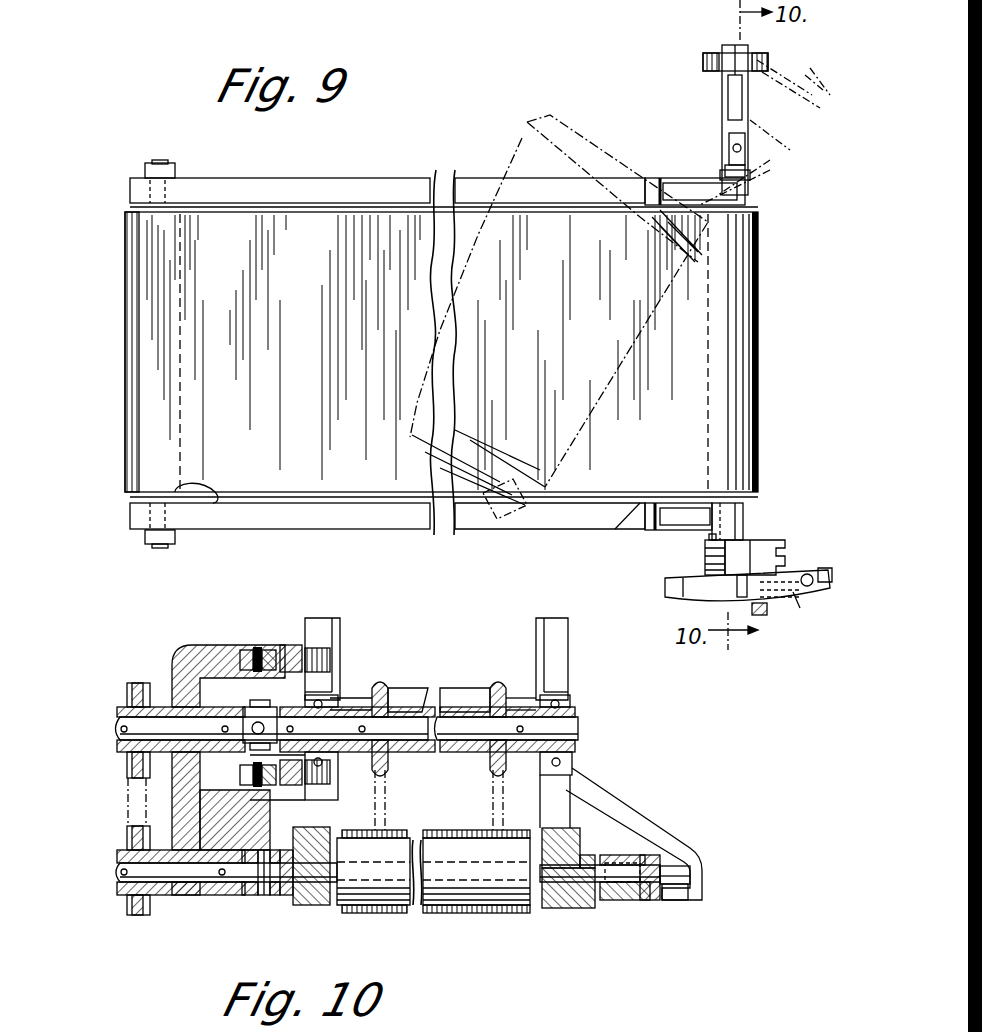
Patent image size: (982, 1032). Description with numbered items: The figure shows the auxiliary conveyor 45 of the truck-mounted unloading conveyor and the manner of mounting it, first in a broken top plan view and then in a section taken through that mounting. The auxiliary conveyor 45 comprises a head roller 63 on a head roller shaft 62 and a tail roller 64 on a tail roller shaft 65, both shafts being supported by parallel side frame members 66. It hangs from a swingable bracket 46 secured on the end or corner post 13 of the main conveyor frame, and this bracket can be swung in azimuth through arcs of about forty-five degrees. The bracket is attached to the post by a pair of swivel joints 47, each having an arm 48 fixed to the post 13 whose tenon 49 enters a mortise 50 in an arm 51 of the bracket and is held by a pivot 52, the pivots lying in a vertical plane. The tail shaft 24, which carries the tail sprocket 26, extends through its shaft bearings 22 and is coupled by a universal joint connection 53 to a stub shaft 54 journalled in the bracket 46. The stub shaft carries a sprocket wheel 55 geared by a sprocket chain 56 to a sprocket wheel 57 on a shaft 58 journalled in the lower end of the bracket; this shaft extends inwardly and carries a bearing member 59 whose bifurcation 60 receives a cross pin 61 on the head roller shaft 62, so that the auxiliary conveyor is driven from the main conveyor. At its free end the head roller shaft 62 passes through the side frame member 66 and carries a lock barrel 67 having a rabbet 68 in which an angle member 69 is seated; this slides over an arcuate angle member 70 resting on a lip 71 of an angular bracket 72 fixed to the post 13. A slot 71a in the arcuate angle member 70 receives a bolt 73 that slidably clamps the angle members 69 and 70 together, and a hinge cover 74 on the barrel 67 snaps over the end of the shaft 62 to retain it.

In FIG. 10, the end or corner post 13 is at (340, 630).
In FIG. 10, the shaft bearing 22 is at (330, 752).
In FIG. 10, the tail shaft 24 is at (440, 742).
In FIG. 10, the tail sprocket 26 is at (382, 685).
In FIG. 9, the auxiliary conveyor 45 is at (458, 220).
In FIG. 10, the auxiliary conveyor 45 is at (418, 838).
In FIG. 9, the swingable bracket 46 is at (722, 88).
In FIG. 10, the swingable bracket 46 is at (176, 668).
In FIG. 10, the swivel joint 47 is at (285, 645).
In FIG. 10, the arm 48 is at (320, 660).
In FIG. 10, the tenon 49 is at (265, 660).
In FIG. 10, the mortise 50 is at (236, 645).
In FIG. 10, the arm 51 is at (206, 645).
In FIG. 10, the pivot 52 is at (257, 645).
In FIG. 10, the universal joint connection 53 is at (248, 712).
In FIG. 10, the stub shaft 54 is at (130, 724).
In FIG. 10, the sprocket wheel 55 is at (132, 695).
In FIG. 10, the sprocket chain 56 is at (128, 796).
In FIG. 9, the sprocket wheel 57 is at (712, 54).
In FIG. 10, the sprocket wheel 57 is at (136, 915).
In FIG. 10, the shaft 58 is at (178, 897).
In FIG. 9, the bearing member 59 is at (750, 145).
In FIG. 10, the bearing member 59 is at (232, 895).
In FIG. 9, the bifurcation 60 is at (755, 175).
In FIG. 10, the bifurcation 60 is at (273, 897).
In FIG. 9, the cross pin 61 is at (727, 155).
In FIG. 10, the cross pin 61 is at (262, 897).
In FIG. 9, the head roller shaft 62 is at (732, 100).
In FIG. 10, the head roller shaft 62 is at (312, 907).
In FIG. 10, the head roller 63 is at (485, 896).
In FIG. 9, the tail roller 64 is at (213, 497).
In FIG. 9, the tail roller shaft 65 is at (160, 544).
In FIG. 9, the side frame member 66 is at (350, 195).
In FIG. 10, the side frame member 66 is at (288, 897).
In FIG. 9, the lock barrel 67 is at (748, 542).
In FIG. 10, the lock barrel 67 is at (612, 902).
In FIG. 10, the rabbet 68 is at (665, 855).
In FIG. 9, the angle member 69 is at (806, 574).
In FIG. 10, the angle member 69 is at (652, 902).
In FIG. 9, the angle member 70 is at (826, 590).
In FIG. 10, the angle member 70 is at (675, 880).
In FIG. 10, the lip 71 is at (670, 895).
In FIG. 9, the slot 71a is at (828, 570).
In FIG. 9, the angular bracket 72 is at (762, 616).
In FIG. 10, the angular bracket 72 is at (706, 858).
In FIG. 9, the bolt 73 is at (810, 611).
In FIG. 9, the hinge cover 74 is at (705, 556).
In FIG. 10, the hinge cover 74 is at (620, 856).